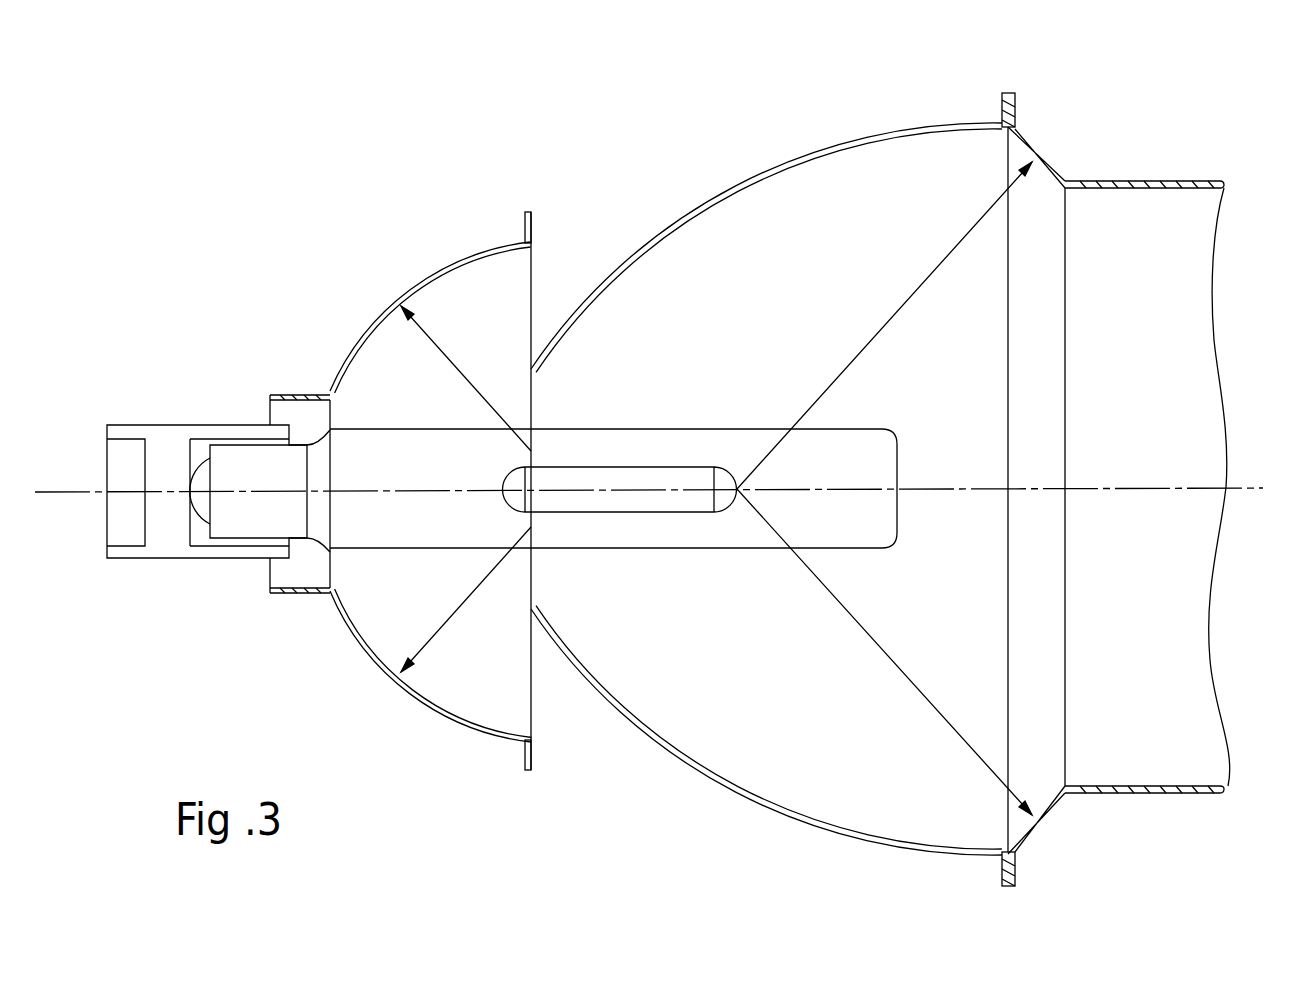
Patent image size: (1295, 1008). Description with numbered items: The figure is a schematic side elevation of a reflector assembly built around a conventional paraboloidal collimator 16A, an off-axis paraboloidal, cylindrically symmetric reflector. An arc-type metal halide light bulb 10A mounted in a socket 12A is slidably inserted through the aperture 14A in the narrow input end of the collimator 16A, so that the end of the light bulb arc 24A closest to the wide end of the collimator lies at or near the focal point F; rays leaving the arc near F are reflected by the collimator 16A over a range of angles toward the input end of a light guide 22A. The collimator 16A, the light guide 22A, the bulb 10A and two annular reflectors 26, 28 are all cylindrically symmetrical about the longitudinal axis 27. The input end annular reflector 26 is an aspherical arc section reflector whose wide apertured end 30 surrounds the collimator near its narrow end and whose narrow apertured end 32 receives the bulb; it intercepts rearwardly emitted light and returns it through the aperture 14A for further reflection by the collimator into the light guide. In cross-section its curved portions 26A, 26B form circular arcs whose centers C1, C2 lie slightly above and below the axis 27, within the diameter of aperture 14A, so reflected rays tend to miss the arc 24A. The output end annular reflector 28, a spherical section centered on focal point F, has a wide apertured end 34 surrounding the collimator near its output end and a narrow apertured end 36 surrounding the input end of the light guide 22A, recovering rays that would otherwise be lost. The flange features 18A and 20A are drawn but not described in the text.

The arc-type metal halide light bulb 10A is at (375, 549).
The socket 12A is at (152, 558).
The aperture 14A is at (533, 552).
The paraboloidal collimator 16A is at (733, 188).
The reflector rim flange 18A is at (1000, 104).
The reflector front plane 20A is at (1015, 104).
The light guide 22A is at (1203, 797).
The light bulb arc 24A is at (573, 508).
The input end annular reflector 26 is at (431, 495).
The curved reflector portion 26A is at (499, 252).
The curved reflector portion 26B is at (503, 735).
The longitudinal axis 27 is at (1240, 485).
The output end annular reflector 28 is at (1047, 160).
The wide apertured end 30 is at (527, 180).
The narrow apertured end 32 is at (325, 362).
The wide apertured end 34 is at (1068, 488).
The narrow apertured end 36 is at (1057, 197).
The focal point F is at (738, 488).
The center of circular arc C1 is at (485, 387).
The center of circular arc C2 is at (485, 595).